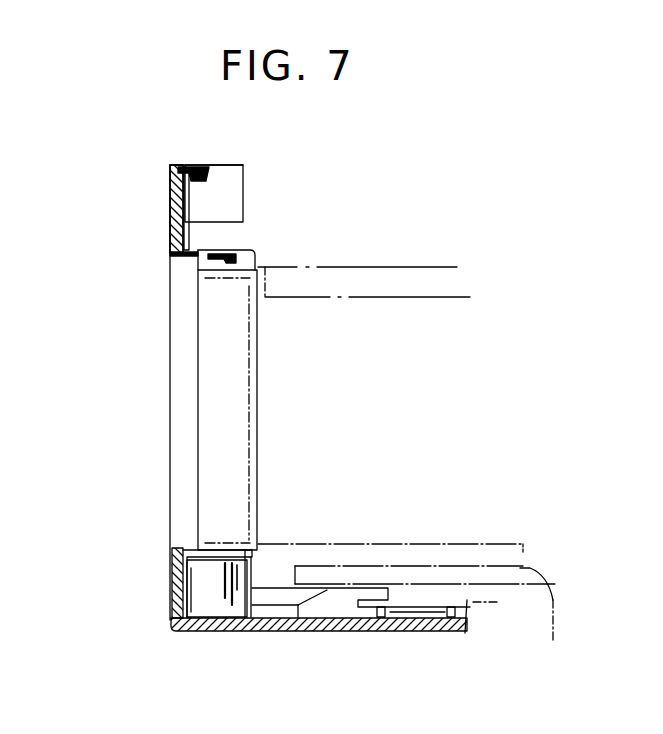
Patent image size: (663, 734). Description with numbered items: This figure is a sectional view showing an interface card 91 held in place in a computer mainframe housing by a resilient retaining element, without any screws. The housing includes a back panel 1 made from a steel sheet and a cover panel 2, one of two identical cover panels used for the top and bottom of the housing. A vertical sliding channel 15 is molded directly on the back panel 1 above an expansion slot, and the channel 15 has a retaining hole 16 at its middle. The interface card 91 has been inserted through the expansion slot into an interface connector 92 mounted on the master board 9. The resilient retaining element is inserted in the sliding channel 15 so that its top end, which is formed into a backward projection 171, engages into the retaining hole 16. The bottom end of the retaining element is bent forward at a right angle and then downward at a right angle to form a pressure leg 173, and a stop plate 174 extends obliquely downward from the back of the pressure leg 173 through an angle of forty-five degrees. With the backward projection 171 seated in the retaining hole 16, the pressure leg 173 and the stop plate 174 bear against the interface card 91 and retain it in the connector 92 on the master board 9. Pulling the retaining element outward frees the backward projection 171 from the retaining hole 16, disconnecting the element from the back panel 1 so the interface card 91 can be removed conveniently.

The back panel 1 is at (167, 445).
The cover panel 2 is at (313, 633).
The master board 9 is at (502, 600).
The sliding channel 15 is at (196, 200).
The retaining hole 16 is at (118, 209).
The interface card 91 is at (392, 310).
The interface connector 92 is at (550, 620).
The backward projection 171 is at (168, 180).
The pressure leg 173 is at (240, 258).
The stop plate 174 is at (208, 167).